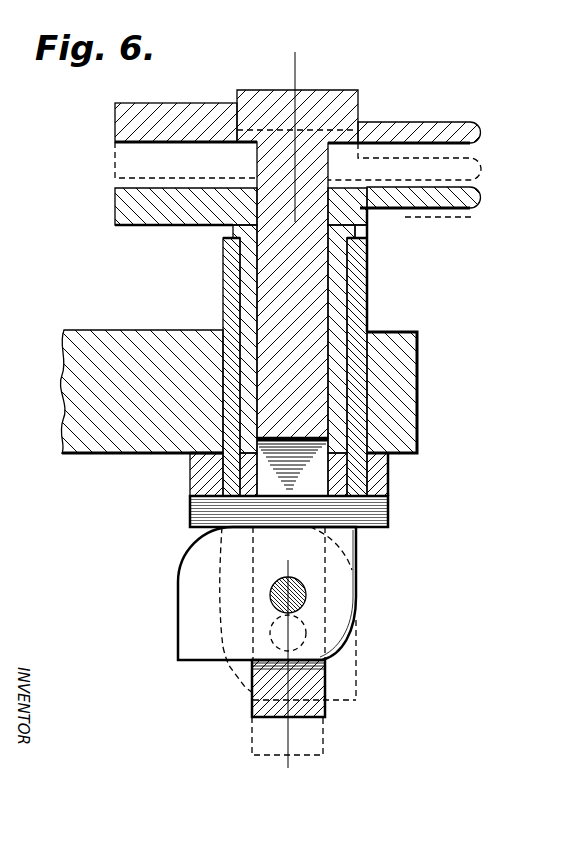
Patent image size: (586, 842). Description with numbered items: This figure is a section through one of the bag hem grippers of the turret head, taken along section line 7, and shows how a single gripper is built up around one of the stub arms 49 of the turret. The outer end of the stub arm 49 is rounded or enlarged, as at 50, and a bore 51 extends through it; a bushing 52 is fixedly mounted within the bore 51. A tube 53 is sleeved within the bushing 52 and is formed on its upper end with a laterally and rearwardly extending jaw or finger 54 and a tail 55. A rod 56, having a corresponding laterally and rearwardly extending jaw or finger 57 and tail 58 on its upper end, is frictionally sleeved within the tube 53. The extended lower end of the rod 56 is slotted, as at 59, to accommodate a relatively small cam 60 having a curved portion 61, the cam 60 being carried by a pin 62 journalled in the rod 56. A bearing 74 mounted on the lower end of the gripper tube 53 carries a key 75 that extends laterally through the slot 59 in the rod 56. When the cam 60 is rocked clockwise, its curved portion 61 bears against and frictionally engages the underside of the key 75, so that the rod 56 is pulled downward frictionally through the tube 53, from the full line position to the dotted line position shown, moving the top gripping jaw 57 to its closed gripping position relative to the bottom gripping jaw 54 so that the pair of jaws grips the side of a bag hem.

The section line 7- 7 is at (308, 417).
The stub arm 49 is at (70, 379).
The rounded or enlarged outer end 50 is at (403, 392).
The bore 51 is at (364, 357).
The bushing 52 is at (363, 268).
The tube 53 is at (367, 227).
The jaw or finger 54 is at (470, 195).
The tail 55 is at (126, 204).
The rod 56 is at (272, 300).
The jaw or finger 57 is at (418, 168).
The tail 58 is at (127, 157).
The slot 59 is at (318, 479).
The cam 60 is at (190, 590).
The curved portion 61 is at (345, 634).
The pin 62 is at (304, 592).
The bearing 74 is at (206, 483).
The key 75 is at (204, 510).